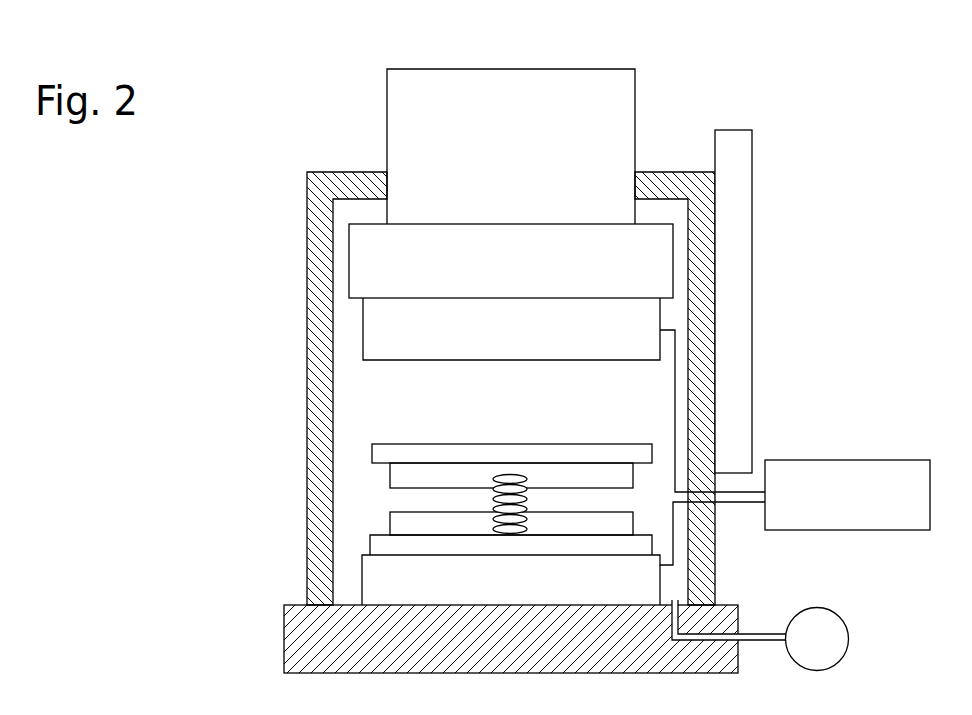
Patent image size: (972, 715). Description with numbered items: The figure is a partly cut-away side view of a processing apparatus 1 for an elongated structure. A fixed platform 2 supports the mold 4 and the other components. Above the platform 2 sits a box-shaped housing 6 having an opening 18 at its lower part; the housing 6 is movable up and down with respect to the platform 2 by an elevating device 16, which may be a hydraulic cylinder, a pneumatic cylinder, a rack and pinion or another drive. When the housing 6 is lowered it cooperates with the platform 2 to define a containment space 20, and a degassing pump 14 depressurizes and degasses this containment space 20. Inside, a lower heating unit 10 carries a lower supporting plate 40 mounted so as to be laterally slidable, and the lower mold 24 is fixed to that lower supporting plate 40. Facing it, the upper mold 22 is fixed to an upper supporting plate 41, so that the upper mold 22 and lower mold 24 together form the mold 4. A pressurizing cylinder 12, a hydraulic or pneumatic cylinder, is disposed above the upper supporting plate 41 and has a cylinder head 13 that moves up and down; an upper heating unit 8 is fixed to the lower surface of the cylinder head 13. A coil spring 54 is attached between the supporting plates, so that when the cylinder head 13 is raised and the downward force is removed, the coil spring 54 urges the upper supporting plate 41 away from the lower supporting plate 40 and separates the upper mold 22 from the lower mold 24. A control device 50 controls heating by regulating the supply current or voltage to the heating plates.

The processing apparatus 1 is at (781, 143).
The platform 2 is at (315, 635).
The mold 4 is at (398, 498).
The housing 6 is at (307, 172).
The upper heating unit 8 is at (370, 320).
The lower heating unit 10 is at (373, 580).
The pressurizing cylinder 12 is at (637, 115).
The cylinder head 13 is at (370, 255).
The degassing pump 14 is at (827, 613).
The elevating device 16 is at (748, 390).
The opening 18 is at (680, 573).
The containment space 20 is at (370, 400).
The upper mold 22 is at (390, 480).
The lower mold 24 is at (390, 523).
The lower supporting plate 40 is at (370, 547).
The upper supporting plate 41 is at (372, 453).
The control device 50 is at (870, 458).
The coil spring 54 is at (527, 476).